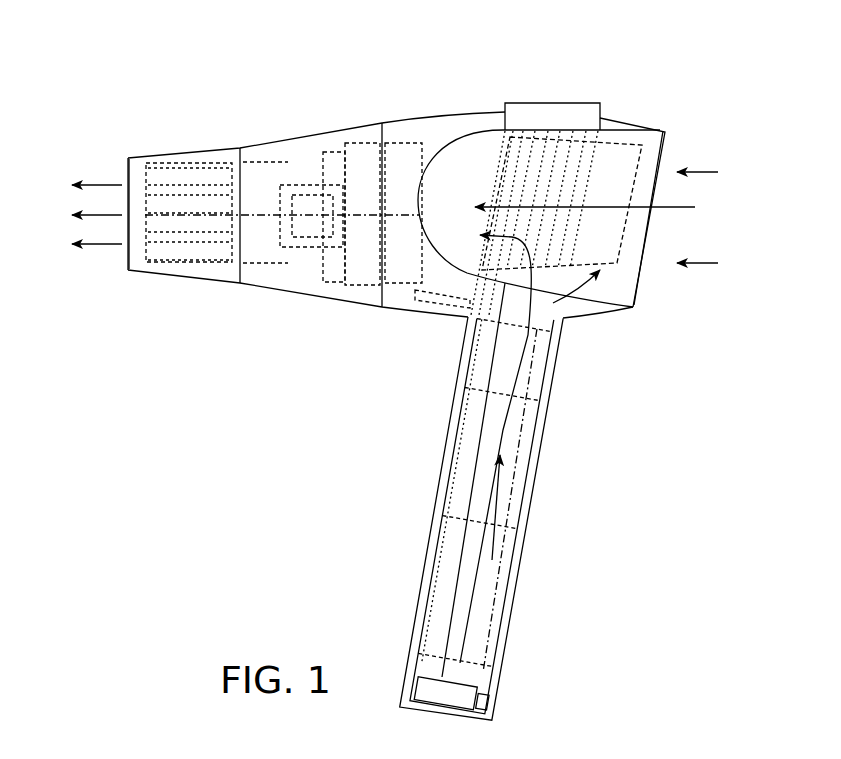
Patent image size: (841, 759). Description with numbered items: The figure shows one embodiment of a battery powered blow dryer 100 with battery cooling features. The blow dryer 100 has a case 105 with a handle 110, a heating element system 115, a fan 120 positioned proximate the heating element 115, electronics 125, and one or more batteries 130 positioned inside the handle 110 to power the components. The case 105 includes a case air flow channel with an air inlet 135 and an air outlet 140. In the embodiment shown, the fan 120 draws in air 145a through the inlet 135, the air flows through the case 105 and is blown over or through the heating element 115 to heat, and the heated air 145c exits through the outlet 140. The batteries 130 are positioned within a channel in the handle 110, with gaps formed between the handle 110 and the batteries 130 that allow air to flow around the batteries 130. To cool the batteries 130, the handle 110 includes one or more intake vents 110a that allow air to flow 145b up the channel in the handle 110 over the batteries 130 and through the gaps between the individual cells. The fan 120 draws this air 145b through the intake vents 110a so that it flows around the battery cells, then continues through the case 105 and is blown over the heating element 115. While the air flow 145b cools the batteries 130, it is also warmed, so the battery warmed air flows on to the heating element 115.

The battery powered blow dryer 100 is at (268, 398).
The case 105 is at (468, 110).
The handle 110 is at (532, 493).
The intake vents 110a is at (487, 697).
The heating element system 115 is at (177, 210).
The fan 120 is at (392, 178).
The electronics 125 is at (613, 160).
The batteries 130 is at (473, 412).
The air inlet 135 is at (667, 152).
The air outlet 140 is at (123, 175).
The air drawn through inlet 145a is at (713, 205).
The air flow through handle 145b is at (490, 572).
The heated air 145c is at (103, 248).